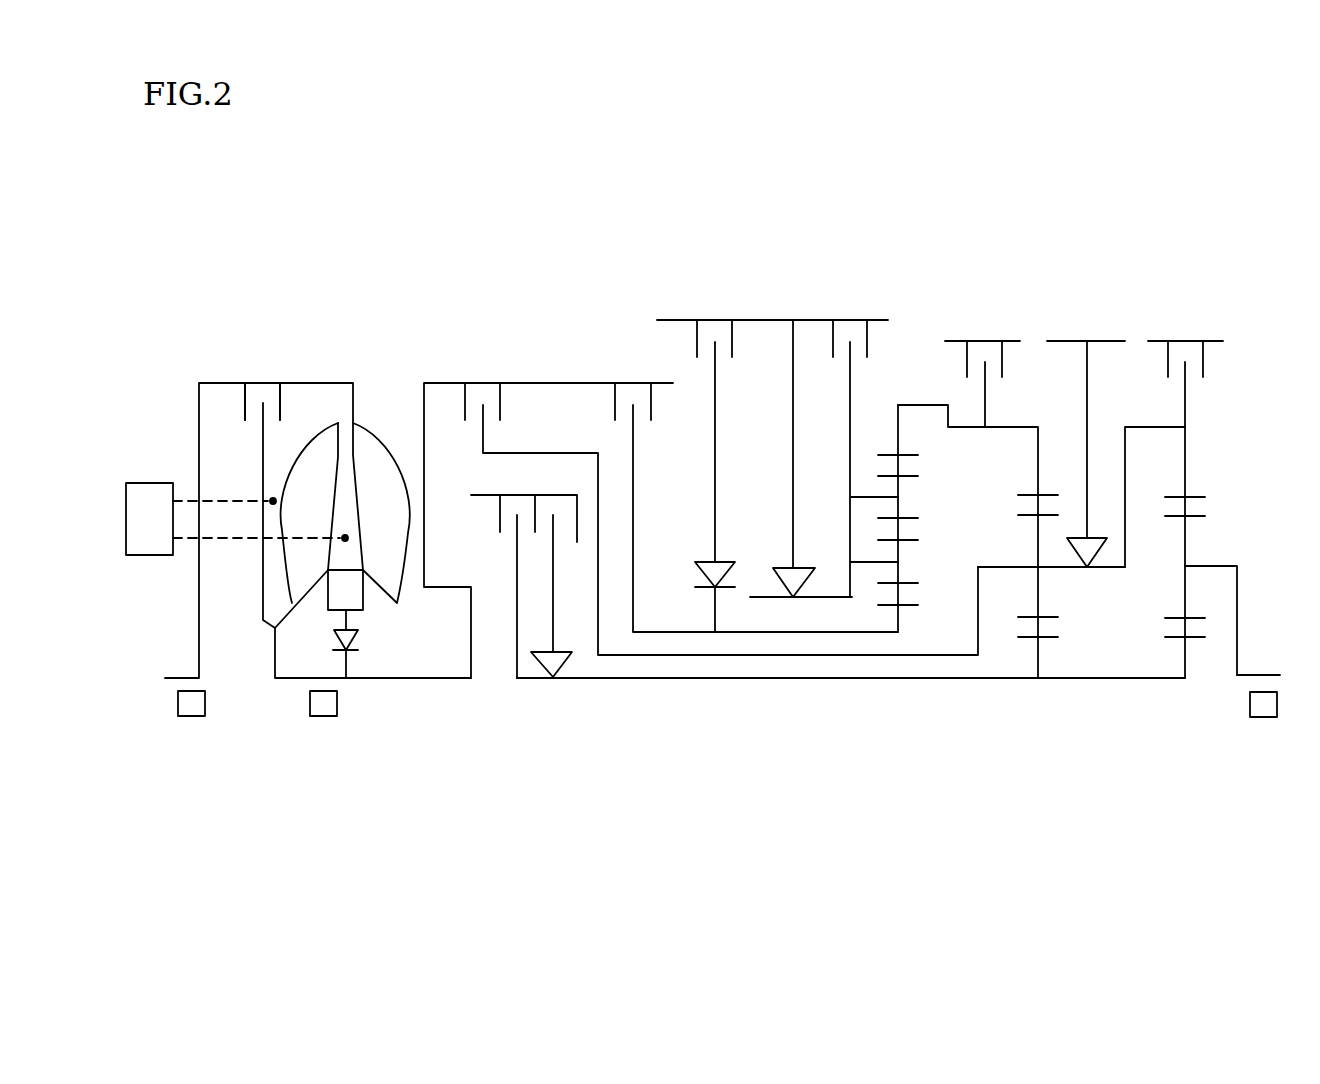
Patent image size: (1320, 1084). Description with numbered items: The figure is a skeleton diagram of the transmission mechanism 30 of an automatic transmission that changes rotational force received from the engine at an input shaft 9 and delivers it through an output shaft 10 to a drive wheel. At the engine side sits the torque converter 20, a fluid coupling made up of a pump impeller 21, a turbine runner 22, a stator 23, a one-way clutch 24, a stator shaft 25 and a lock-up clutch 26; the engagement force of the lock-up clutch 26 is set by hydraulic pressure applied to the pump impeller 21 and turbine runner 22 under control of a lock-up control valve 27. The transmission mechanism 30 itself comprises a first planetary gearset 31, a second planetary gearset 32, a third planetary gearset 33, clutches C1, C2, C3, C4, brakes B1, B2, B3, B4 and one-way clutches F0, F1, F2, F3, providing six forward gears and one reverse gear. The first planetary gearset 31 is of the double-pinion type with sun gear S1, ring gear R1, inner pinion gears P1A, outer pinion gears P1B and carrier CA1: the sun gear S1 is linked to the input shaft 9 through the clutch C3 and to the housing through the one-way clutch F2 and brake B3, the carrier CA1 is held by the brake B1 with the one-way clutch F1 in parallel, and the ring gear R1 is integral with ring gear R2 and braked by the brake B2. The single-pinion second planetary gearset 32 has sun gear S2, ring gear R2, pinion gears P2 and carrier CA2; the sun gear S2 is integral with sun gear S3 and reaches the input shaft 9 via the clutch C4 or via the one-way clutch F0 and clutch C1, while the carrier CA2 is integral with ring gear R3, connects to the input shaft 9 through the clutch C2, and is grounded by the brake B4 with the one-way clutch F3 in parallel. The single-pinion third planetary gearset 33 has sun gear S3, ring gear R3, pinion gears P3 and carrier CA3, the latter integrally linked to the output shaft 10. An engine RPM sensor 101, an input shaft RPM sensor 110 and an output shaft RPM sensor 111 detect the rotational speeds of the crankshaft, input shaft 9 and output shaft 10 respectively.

The input shaft 9 is at (440, 678).
The output shaft 10 is at (1260, 670).
The torque converter 20 is at (295, 501).
The pump impeller 21 is at (397, 583).
The turbine runner 22 is at (290, 560).
The stator 23 is at (332, 600).
The one-way clutch 24 is at (360, 638).
The stator shaft 25 is at (346, 670).
The lock-up clutch 26 is at (253, 413).
The lock-up control valve 27 is at (153, 483).
The transmission mechanism 30 is at (983, 502).
The first planetary gearset 31 is at (914, 563).
The second planetary gearset 32 is at (1053, 613).
The third planetary gearset 33 is at (1201, 615).
The engine RPM sensor 101 is at (191, 716).
The input shaft RPM sensor 110 is at (323, 716).
The output shaft RPM sensor 111 is at (1263, 717).
The clutch C1 is at (536, 573).
The clutch C2 is at (825, 504).
The clutch C3 is at (756, 492).
The clutch C4 is at (524, 586).
The brake B1 is at (849, 324).
The brake B2 is at (982, 368).
The brake B3 is at (714, 324).
The brake B4 is at (1185, 494).
The one-way clutch F0 is at (551, 682).
The one-way clutch F1 is at (801, 458).
The one-way clutch F2 is at (701, 487).
The one-way clutch F3 is at (1086, 470).
The ring gear R1 is at (888, 452).
The ring gear R2 is at (1028, 492).
The ring gear R3 is at (1195, 493).
The sun gear S1 is at (881, 648).
The sun gear S2 is at (1045, 638).
The sun gear S3 is at (1195, 638).
The inner pinion gears P1A is at (900, 570).
The outer pinion gears P1B is at (900, 505).
The pinion gears P2 is at (1037, 547).
The pinion gears P3 is at (1183, 545).
The carrier CA1 is at (848, 530).
The carrier CA2 is at (1052, 570).
The carrier CA3 is at (1215, 563).